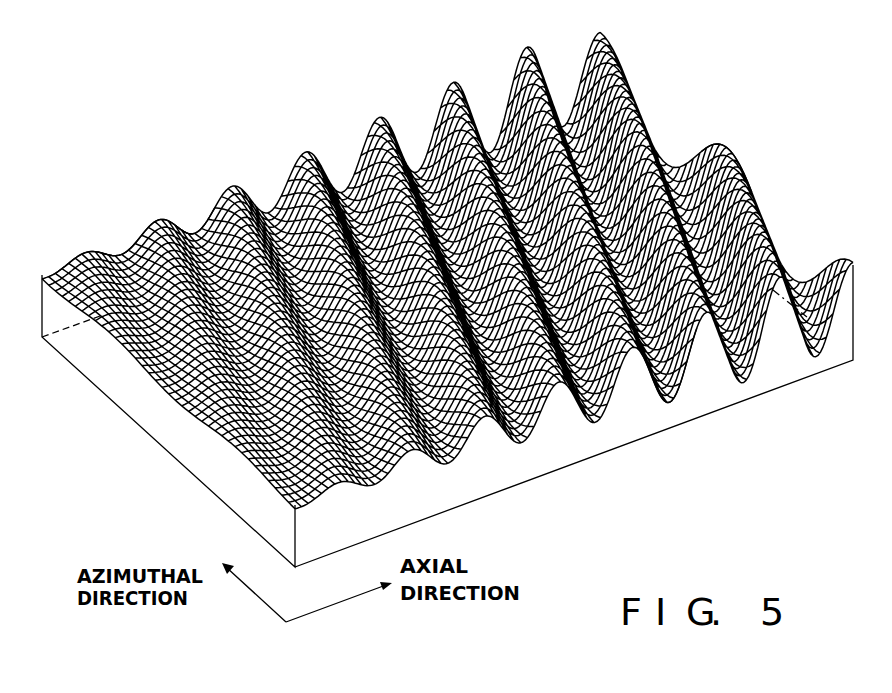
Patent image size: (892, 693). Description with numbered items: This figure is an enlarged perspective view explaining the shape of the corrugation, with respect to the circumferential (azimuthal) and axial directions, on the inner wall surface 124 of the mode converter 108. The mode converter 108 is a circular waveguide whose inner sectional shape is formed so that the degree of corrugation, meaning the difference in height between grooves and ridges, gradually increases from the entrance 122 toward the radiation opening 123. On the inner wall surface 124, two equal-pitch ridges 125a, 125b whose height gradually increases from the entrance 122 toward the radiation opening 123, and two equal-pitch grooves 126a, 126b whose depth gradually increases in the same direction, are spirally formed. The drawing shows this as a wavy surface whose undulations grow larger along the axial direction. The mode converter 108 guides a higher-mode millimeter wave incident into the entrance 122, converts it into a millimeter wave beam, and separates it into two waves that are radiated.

The mode converter 108 is at (627, 449).
The entrance 122 is at (106, 376).
The radiation opening 123 is at (713, 127).
The inner wall surface 124 is at (686, 394).
The ridge 125a is at (117, 243).
The ridge 125b is at (190, 223).
The groove 126a is at (82, 250).
The groove 126b is at (160, 217).